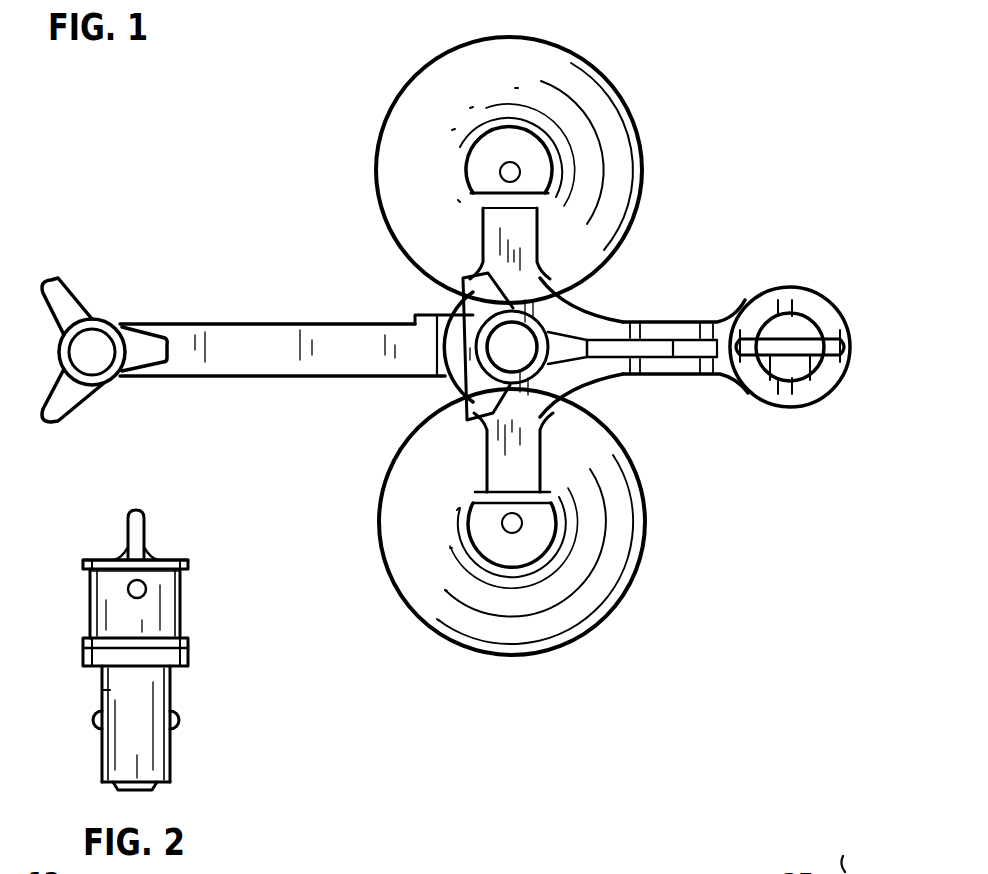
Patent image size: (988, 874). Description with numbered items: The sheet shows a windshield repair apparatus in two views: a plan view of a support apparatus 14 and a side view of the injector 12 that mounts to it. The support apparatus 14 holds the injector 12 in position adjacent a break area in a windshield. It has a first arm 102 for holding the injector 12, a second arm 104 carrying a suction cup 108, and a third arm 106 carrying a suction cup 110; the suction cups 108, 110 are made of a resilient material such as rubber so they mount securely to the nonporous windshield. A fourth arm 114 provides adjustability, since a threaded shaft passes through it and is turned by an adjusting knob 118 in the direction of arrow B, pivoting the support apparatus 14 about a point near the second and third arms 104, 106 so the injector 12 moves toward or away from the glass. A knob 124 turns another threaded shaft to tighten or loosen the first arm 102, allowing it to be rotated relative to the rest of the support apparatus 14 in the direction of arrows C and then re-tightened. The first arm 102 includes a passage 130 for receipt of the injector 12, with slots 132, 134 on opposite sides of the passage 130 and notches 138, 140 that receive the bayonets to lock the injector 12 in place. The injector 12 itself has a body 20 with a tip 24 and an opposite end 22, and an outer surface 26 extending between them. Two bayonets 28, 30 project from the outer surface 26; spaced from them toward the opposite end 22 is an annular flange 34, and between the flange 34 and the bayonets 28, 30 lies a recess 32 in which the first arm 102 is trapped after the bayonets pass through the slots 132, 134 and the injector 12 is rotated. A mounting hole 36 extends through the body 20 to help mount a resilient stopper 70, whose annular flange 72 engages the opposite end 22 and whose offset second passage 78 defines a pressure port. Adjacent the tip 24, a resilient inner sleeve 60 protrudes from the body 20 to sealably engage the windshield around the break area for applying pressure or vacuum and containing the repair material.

In FIG. 2, the injector 12 is at (198, 513).
In FIG. 1, the support apparatus 14 is at (282, 186).
In FIG. 2, the body 20 is at (190, 610).
In FIG. 2, the opposite end 22 is at (190, 594).
In FIG. 2, the tip 24 is at (162, 782).
In FIG. 2, the outer surface 26 is at (172, 692).
In FIG. 2, the bayonet 28 is at (184, 727).
In FIG. 2, the bayonet 30 is at (90, 727).
In FIG. 2, the recess 32 is at (100, 692).
In FIG. 2, the annular flange 34 is at (192, 642).
In FIG. 2, the mounting hole 36 is at (127, 592).
In FIG. 2, the resilient inner sleeve 60 is at (150, 790).
In FIG. 2, the resilient stopper 70 is at (186, 560).
In FIG. 2, the annular flange 72 is at (82, 560).
In FIG. 2, the second passage 78 is at (134, 508).
In FIG. 1, the first arm 102 is at (806, 405).
In FIG. 1, the second arm 104 is at (575, 250).
In FIG. 1, the third arm 106 is at (552, 468).
In FIG. 1, the suction cup 108 is at (596, 68).
In FIG. 1, the suction cup 110 is at (514, 657).
In FIG. 1, the fourth arm 114 is at (232, 322).
In FIG. 1, the adjusting knob 118 is at (78, 288).
In FIG. 1, the knob 124 is at (468, 318).
In FIG. 1, the passage 130 is at (815, 300).
In FIG. 1, the slot 132 is at (736, 395).
In FIG. 1, the slot 134 is at (824, 395).
In FIG. 1, the notch 138 is at (788, 290).
In FIG. 1, the notch 140 is at (786, 410).